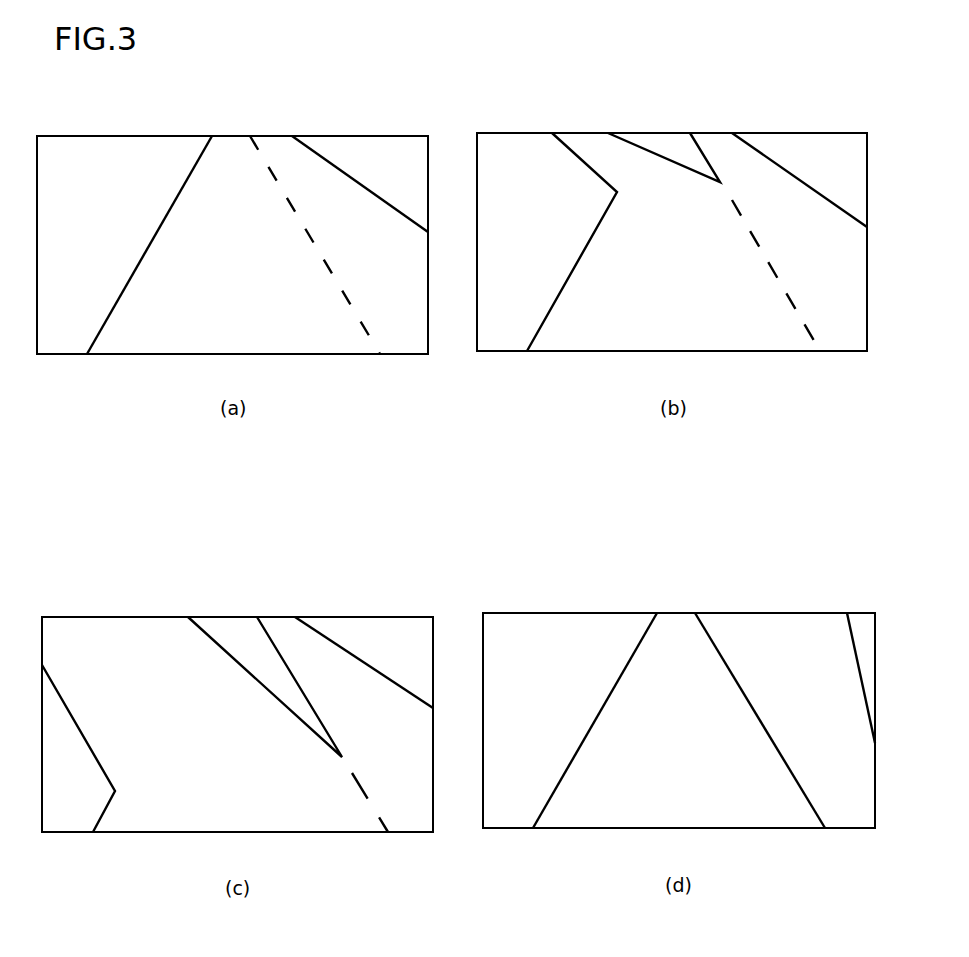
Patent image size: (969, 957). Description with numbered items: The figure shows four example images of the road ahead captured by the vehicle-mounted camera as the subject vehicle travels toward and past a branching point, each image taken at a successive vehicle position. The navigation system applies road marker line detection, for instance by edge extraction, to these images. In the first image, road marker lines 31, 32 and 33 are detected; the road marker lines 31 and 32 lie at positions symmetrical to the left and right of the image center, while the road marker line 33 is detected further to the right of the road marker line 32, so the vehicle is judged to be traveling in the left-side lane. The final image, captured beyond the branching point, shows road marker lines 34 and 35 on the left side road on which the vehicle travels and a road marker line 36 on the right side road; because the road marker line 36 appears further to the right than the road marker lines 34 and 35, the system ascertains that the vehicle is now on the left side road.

The road marker line 31 is at (130, 277).
The road marker line 32 is at (337, 272).
The road marker line 33 is at (355, 178).
The road marker line 34 is at (577, 752).
The road marker line 35 is at (780, 747).
The road marker line 36 is at (855, 648).